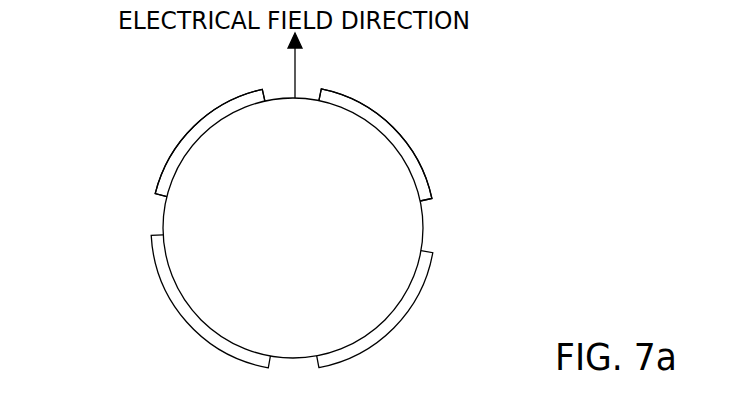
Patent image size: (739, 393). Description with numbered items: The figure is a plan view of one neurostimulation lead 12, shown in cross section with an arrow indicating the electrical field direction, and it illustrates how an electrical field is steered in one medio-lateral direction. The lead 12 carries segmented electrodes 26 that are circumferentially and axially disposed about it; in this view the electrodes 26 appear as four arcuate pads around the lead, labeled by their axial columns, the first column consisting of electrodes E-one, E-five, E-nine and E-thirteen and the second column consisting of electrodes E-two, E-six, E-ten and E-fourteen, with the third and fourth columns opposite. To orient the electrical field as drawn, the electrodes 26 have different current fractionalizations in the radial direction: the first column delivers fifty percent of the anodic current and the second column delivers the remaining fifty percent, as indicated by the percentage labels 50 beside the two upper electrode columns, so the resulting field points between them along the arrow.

The neurostimulation lead 12 is at (490, 42).
The electrodes 26 is at (157, 268).
The 50% electrode group (percentage label) 50 is at (294, 145).